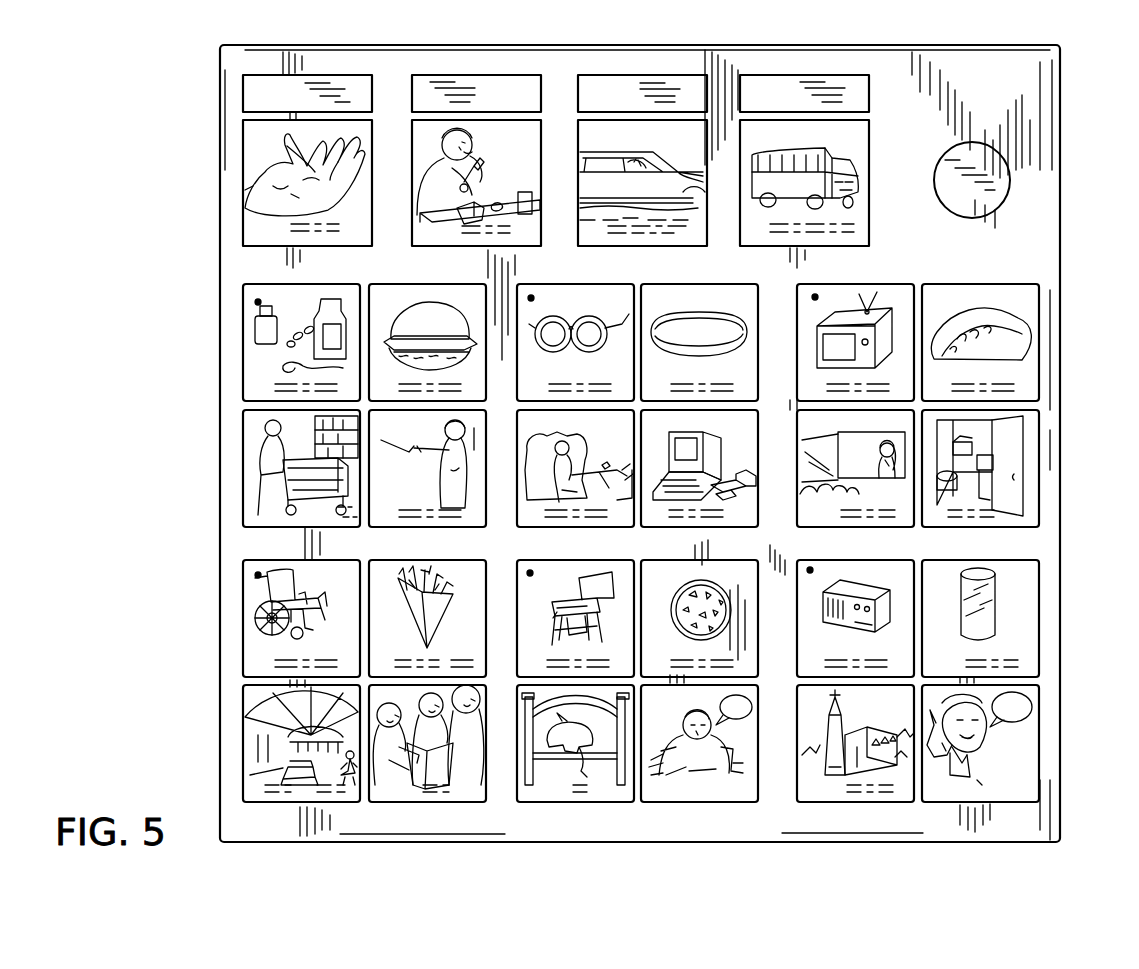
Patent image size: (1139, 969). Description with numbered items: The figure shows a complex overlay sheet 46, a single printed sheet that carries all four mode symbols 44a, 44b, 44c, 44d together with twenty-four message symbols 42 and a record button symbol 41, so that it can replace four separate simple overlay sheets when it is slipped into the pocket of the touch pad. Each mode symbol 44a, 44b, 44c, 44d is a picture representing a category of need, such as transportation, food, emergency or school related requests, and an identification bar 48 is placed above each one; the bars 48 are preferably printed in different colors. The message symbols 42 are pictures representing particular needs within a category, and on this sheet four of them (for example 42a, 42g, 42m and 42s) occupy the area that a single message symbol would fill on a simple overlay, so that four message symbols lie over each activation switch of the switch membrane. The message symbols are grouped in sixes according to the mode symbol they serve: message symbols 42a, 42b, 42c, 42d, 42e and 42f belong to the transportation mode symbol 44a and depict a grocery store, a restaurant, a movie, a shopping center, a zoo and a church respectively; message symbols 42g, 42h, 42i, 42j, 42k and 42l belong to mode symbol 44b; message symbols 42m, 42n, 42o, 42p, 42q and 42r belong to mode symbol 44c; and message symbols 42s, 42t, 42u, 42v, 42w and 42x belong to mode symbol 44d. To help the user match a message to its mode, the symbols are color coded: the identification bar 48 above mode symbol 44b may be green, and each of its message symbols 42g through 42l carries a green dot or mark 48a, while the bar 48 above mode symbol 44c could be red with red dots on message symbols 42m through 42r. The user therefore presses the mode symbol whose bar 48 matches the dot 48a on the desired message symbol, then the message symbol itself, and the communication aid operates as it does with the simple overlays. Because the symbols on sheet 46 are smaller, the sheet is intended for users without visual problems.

The record button symbol 41 is at (1005, 185).
The message symbols 42 is at (1020, 372).
The message symbol 42a is at (255, 438).
The message symbol 42b is at (573, 523).
The message symbol 42c is at (808, 528).
The message symbol 42d is at (253, 780).
The message symbol 42e is at (605, 795).
The message symbol 42f is at (832, 795).
The message symbol 42g is at (253, 370).
The message symbol 42h is at (582, 300).
The message symbol 42i is at (868, 290).
The message symbol 42j is at (255, 595).
The message symbol 42k is at (612, 570).
The message symbol 42l is at (915, 550).
The message symbol 42m is at (405, 278).
The message symbol 42n is at (690, 295).
The message symbol 42o is at (960, 292).
The message symbol 42p is at (440, 572).
The message symbol 42q is at (658, 575).
The message symbol 42r is at (945, 570).
The message symbol 42s is at (370, 528).
The message symbol 42t is at (745, 428).
The message symbol 42u is at (1030, 462).
The message symbol 42v is at (455, 790).
The message symbol 42w is at (720, 790).
The message symbol 42x is at (965, 790).
The mode symbol 44a is at (676, 140).
The mode symbol 44b is at (258, 225).
The mode symbol 44c is at (512, 135).
The mode symbol 44d is at (850, 137).
The complex overlay sheet 46 is at (1040, 115).
The identification bar 48 is at (346, 94).
The colored dot or mark 48a is at (258, 302).